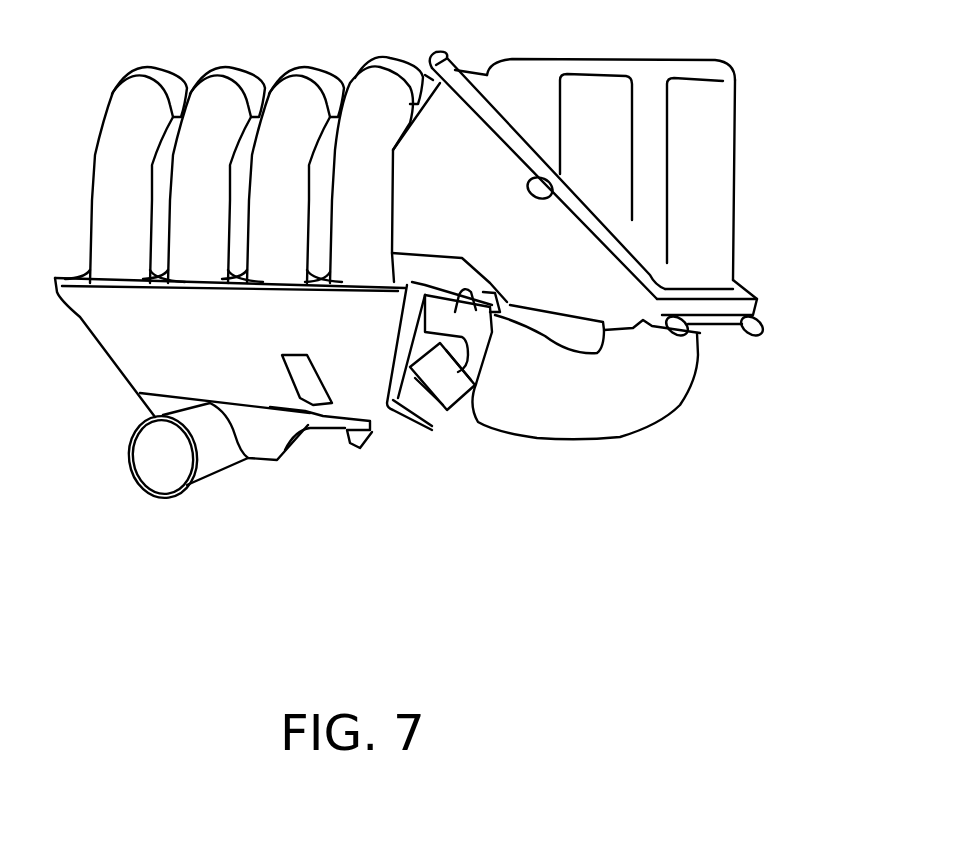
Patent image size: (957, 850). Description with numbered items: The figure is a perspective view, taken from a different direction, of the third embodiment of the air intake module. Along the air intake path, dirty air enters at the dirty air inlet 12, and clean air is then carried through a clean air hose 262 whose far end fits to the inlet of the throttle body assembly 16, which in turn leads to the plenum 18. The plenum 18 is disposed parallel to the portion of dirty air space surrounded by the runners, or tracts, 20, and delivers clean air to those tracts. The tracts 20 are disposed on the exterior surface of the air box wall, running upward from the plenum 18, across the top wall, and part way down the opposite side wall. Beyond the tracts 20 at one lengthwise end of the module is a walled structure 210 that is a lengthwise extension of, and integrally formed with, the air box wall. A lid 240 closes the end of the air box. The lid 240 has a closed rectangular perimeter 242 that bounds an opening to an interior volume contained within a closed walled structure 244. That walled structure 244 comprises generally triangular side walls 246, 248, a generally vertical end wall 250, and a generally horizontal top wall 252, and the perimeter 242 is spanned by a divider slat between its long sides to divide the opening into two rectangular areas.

The dirty air inlet 12 is at (175, 503).
The throttle body assembly 16 is at (439, 433).
The plenum 18 is at (135, 355).
The runners 20 is at (242, 72).
The walled structure 210 is at (648, 336).
The lid 240 is at (622, 234).
The closed rectangular perimeter 242 is at (753, 298).
The closed walled structure 244 is at (715, 187).
The side wall 246 is at (558, 108).
The side wall 248 is at (735, 125).
The end wall 250 is at (707, 228).
The top wall 252 is at (642, 62).
The clean air hose 262 is at (582, 407).